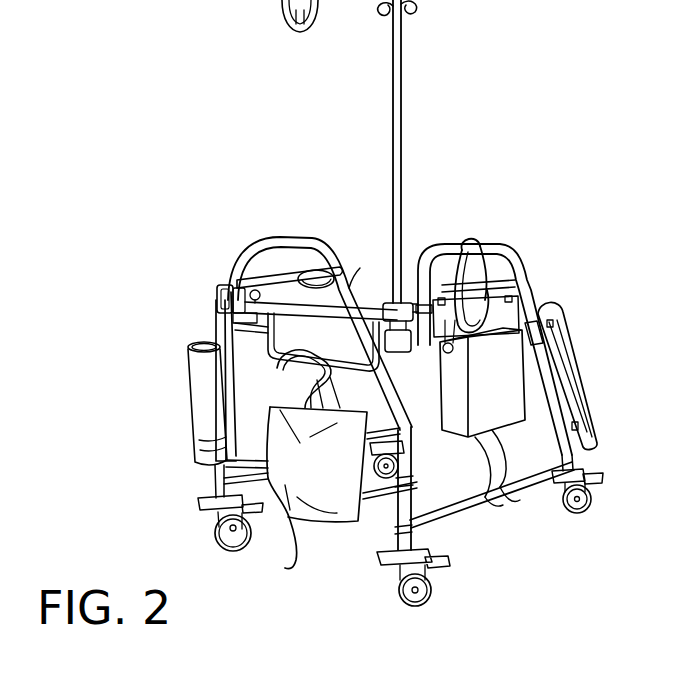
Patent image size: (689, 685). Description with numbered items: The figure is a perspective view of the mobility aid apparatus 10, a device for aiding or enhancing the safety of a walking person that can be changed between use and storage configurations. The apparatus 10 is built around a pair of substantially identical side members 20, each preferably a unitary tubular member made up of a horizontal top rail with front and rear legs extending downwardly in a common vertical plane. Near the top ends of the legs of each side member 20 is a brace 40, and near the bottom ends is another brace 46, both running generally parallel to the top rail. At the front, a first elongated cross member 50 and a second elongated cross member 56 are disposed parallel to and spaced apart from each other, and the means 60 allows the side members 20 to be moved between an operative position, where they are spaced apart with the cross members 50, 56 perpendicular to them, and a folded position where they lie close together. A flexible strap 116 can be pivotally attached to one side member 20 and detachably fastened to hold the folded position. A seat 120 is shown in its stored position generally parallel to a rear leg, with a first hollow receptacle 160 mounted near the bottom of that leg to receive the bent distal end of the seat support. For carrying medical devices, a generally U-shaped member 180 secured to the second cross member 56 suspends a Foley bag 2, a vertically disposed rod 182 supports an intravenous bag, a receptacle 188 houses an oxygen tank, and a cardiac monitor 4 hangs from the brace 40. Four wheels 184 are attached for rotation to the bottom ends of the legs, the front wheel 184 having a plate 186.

The Foley bag 2 is at (294, 566).
The cardiac monitor 4 is at (477, 450).
The mobility aid apparatus 10 is at (246, 192).
The side member 20 is at (532, 263).
The brace 40 is at (289, 269).
The brace 46 is at (500, 490).
The first elongated cross member 50 is at (384, 505).
The second elongated cross member 56 is at (334, 326).
The means for moving the pair of side members 60 is at (197, 311).
The flexible strap 116 is at (357, 265).
The seat 120 is at (578, 338).
The first hollow receptacle 160 is at (586, 462).
The generally U-shaped member 180 is at (270, 360).
The vertically disposed rod 182 is at (402, 130).
The wheel 184 is at (414, 587).
The plate 186 is at (381, 562).
The receptacle 188 is at (185, 400).